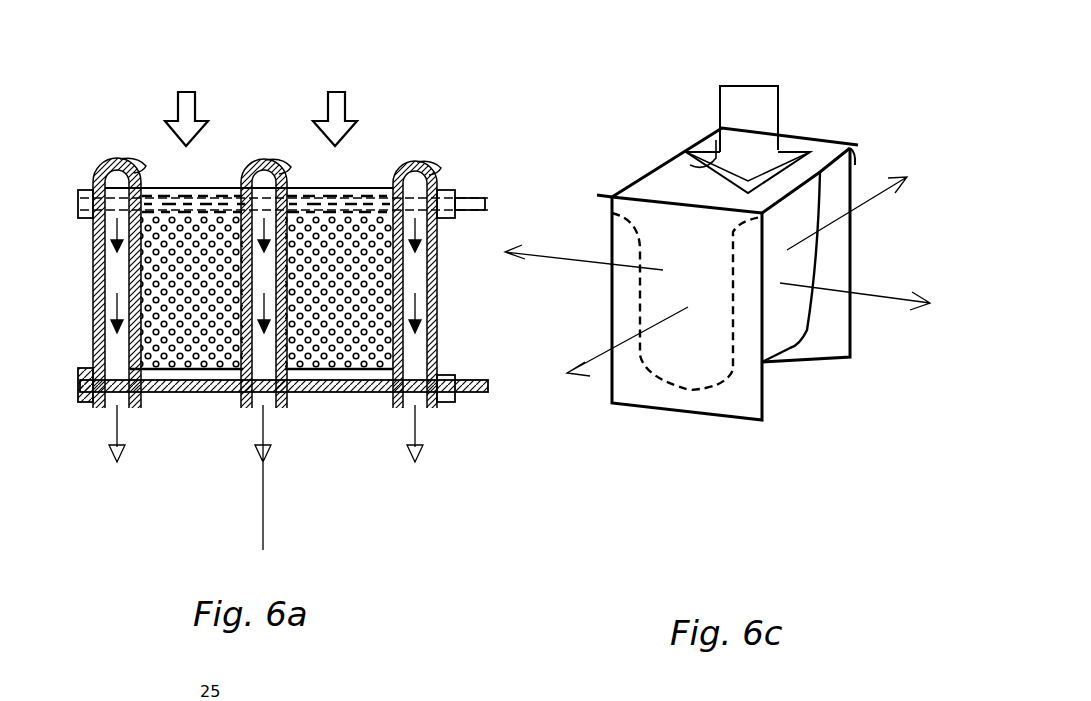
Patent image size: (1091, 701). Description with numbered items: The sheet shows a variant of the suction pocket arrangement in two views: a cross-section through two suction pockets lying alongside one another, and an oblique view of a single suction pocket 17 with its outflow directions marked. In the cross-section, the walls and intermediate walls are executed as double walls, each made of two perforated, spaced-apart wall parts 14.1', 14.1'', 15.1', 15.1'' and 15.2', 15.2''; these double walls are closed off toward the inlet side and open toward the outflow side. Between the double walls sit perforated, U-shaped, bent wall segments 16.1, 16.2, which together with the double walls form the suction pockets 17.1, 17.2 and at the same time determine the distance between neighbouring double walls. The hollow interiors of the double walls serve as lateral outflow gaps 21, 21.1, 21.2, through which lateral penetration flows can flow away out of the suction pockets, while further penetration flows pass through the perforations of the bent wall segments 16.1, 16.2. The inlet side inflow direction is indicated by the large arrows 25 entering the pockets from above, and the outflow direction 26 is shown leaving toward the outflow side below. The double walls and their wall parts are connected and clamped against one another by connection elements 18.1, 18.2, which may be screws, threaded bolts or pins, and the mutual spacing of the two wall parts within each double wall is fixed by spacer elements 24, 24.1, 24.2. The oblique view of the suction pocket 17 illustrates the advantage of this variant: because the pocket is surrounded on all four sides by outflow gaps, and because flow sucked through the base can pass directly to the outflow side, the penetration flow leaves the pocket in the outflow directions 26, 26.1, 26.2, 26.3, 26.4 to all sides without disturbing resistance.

In FIG. 6A, the double wall part 14.1' is at (67, 398).
In FIG. 6A, the double wall part 14.1'' is at (160, 398).
In FIG. 6A, the double wall part 15.1' is at (233, 398).
In FIG. 6A, the double wall part 15.1'' is at (307, 401).
In FIG. 6A, the double wall part 15.2' is at (378, 401).
In FIG. 6A, the double wall part 15.2'' is at (461, 401).
In FIG. 6A, the perforated U-shaped bent wall segment 16.1 is at (160, 188).
In FIG. 6A, the perforated U-shaped bent wall segment 16.2 is at (307, 188).
In FIG. 6C, the suction pocket 17 is at (712, 172).
In FIG. 6A, the suction pocket 17.1 is at (219, 178).
In FIG. 6A, the suction pocket 17.2 is at (376, 178).
In FIG. 6A, the connection element 18.1 is at (470, 400).
In FIG. 6A, the connection element 18.2 is at (467, 200).
In FIG. 6A, the lateral outflow gap 21 is at (123, 403).
In FIG. 6A, the lateral outflow gap 21.1 is at (283, 403).
In FIG. 6A, the lateral outflow gap 21.2 is at (422, 403).
In FIG. 6A, the spacer element 24 is at (116, 188).
In FIG. 6A, the spacer element 24.1 is at (262, 165).
In FIG. 6A, the spacer element 24.2 is at (420, 165).
In FIG. 6A, the inlet side inflow direction 25 is at (337, 92).
In FIG. 6C, the inlet side inflow direction 25 is at (755, 86).
In FIG. 6A, the outflow direction 26 is at (258, 489).
In FIG. 6C, the outflow direction 26 is at (737, 358).
In FIG. 6C, the outflow direction 26.1 is at (613, 354).
In FIG. 6C, the outflow direction 26.2 is at (855, 311).
In FIG. 6C, the outflow direction 26.3 is at (858, 199).
In FIG. 6C, the outflow direction 26.4 is at (581, 247).